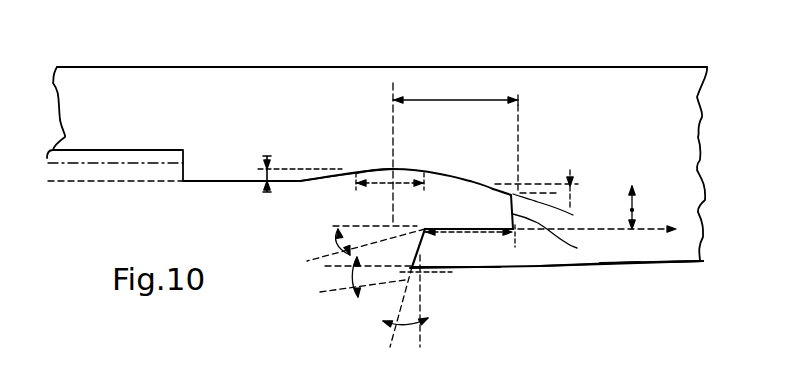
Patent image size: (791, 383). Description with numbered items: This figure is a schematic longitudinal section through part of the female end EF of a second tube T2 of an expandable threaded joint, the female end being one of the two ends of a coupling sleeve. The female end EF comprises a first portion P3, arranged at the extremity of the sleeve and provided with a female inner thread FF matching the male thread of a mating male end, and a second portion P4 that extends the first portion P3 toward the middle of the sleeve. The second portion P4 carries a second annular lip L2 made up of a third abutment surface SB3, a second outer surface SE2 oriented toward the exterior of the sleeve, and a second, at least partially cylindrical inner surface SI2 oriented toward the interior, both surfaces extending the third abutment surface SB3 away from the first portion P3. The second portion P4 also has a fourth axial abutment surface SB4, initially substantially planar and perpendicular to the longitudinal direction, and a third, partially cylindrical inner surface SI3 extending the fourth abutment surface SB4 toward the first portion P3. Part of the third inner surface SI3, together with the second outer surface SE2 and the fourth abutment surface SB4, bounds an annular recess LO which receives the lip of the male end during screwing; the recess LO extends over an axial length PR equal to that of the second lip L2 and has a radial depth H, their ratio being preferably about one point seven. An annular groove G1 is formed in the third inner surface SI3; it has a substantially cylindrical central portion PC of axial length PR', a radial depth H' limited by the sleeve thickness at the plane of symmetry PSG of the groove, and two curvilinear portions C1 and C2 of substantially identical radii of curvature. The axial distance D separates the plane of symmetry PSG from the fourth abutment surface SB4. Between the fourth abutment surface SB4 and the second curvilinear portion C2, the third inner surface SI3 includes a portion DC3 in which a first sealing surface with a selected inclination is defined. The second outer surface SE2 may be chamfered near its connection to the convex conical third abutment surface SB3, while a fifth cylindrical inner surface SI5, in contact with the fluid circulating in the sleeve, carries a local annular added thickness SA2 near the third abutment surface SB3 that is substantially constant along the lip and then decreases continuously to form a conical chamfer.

The first portion P3 is at (128, 64).
The second tube T2 is at (183, 66).
The female end EF is at (279, 63).
The female inner thread FF is at (112, 181).
The radial depth of the groove H' is at (282, 164).
The third inner surface SI3 is at (247, 193).
The annular groove G1 is at (336, 185).
The first curvilinear portion C1 is at (299, 173).
The plane of symmetry of the groove PSG is at (393, 96).
The central portion PC is at (409, 163).
The second curvilinear portion C2 is at (466, 168).
The axial distance D is at (465, 99).
The portion of the third inner surface DC3 is at (501, 183).
The second outer surface SE2 is at (455, 212).
The axial length of the central portion PR' is at (379, 194).
The axial length of the recess PR is at (556, 246).
The third abutment surface SB3 is at (408, 247).
The second annular lip L2 is at (449, 284).
The second inner surface SI2 is at (460, 269).
The fourth axial abutment surface SB4 is at (570, 236).
The annular recess LO is at (597, 217).
The radial depth of the recess H is at (656, 207).
The local annular added thickness SA2 is at (570, 284).
The second portion P4 is at (636, 289).
The fifth cylindrical inner surface SI5 is at (675, 263).